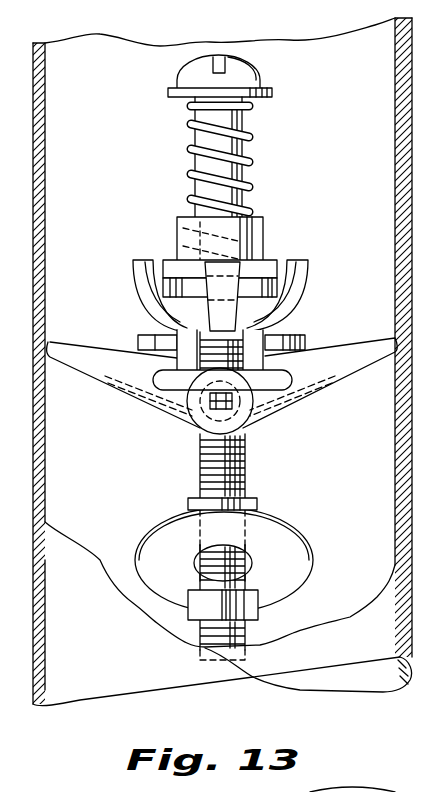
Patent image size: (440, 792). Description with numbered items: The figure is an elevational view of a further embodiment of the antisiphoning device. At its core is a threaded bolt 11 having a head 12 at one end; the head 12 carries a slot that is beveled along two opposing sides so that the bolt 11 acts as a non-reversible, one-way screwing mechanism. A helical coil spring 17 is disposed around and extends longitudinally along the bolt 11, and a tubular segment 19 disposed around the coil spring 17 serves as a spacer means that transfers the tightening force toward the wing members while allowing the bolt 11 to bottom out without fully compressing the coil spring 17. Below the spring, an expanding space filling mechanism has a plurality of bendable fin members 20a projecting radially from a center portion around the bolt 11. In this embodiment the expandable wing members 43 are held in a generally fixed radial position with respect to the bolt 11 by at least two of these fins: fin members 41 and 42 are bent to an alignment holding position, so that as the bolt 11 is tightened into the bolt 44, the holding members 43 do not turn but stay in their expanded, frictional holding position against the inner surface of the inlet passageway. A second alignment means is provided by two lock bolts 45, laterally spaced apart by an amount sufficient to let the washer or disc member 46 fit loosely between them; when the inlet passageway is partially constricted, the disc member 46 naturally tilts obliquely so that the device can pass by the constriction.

The head 12 is at (244, 71).
The bolt 11 is at (242, 183).
The coil spring 17 is at (244, 158).
The tubular segment 19 is at (262, 220).
The fin members 20a is at (303, 262).
The fin member 41 is at (255, 343).
The fin member 42 is at (178, 343).
The wing members 43 is at (327, 363).
The bolt 44 is at (238, 423).
The lock bolts 45 is at (247, 610).
The disc member 46 is at (267, 545).